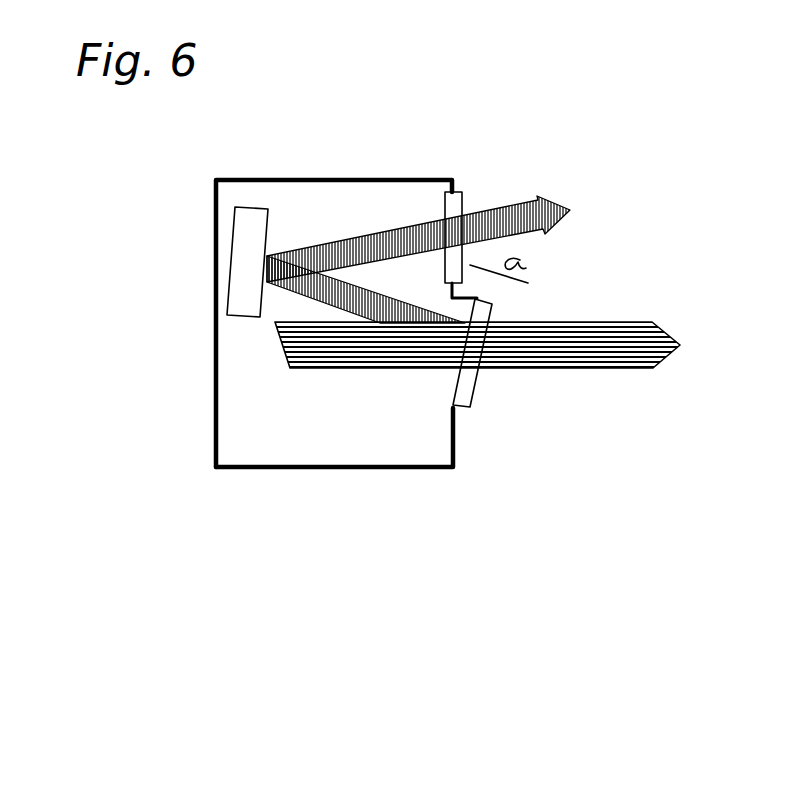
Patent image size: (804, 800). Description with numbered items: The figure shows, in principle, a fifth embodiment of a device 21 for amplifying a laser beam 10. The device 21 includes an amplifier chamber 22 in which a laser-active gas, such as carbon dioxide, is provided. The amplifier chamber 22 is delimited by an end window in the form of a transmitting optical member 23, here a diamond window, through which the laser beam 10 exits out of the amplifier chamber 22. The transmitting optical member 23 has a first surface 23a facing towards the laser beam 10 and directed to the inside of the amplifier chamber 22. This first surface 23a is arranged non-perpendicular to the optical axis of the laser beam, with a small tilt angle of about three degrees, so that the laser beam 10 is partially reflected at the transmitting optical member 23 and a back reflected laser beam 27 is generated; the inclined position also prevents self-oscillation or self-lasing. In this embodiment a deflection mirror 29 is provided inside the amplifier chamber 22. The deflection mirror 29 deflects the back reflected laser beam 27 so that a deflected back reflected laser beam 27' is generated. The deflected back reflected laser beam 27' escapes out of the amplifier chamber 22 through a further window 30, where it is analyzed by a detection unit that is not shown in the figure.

The laser beam 10 is at (572, 355).
The device 21 is at (578, 155).
The amplifier chamber 22 is at (320, 445).
The transmitting optical member 23 is at (480, 268).
The first surface 23a is at (458, 385).
The back reflected laser beam 27 is at (418, 163).
The deflected back reflected laser beam 27' is at (396, 181).
The deflection mirror 29 is at (240, 250).
The further window 30 is at (480, 268).